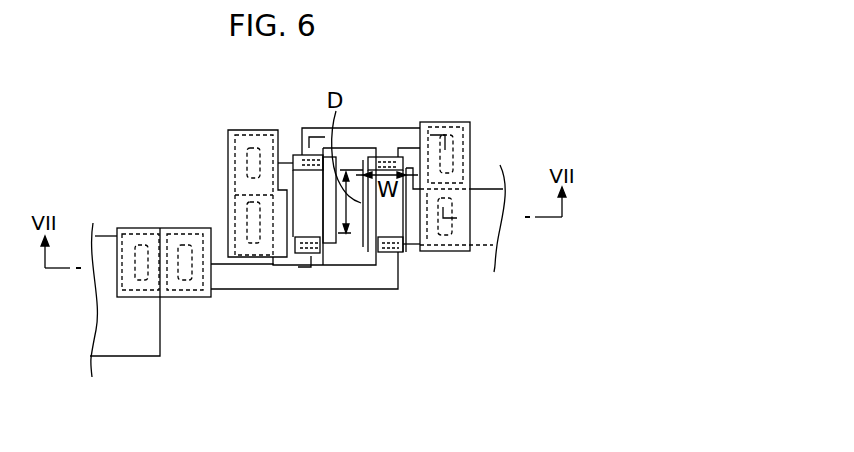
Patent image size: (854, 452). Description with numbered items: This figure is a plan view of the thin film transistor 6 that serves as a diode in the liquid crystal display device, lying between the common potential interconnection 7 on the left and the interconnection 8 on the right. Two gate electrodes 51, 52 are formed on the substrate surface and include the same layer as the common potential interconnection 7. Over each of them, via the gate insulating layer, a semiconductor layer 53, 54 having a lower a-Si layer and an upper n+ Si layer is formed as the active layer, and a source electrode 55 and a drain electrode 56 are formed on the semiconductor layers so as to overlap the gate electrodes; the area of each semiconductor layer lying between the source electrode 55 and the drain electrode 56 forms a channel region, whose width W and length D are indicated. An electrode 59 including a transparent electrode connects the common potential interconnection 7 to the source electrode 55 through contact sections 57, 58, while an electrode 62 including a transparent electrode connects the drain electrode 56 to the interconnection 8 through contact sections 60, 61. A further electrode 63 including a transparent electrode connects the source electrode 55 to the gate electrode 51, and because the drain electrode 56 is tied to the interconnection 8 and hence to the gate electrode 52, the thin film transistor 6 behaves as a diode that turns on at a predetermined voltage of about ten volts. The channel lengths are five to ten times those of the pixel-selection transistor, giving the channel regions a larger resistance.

The thin film transistor 6 is at (507, 93).
The common potential interconnection 7 is at (133, 347).
The interconnection 8 is at (497, 242).
The gate electrode 51 is at (286, 155).
The gate electrode 52 is at (358, 202).
The semiconductor layer 53 is at (295, 255).
The semiconductor layer 54 is at (376, 218).
The source electrode 55 is at (237, 290).
The drain electrode 56 is at (400, 130).
The contact section 57 is at (142, 223).
The contact section 58 is at (187, 228).
The electrode 59 is at (165, 228).
The contact section 60 is at (453, 130).
The contact section 61 is at (437, 253).
The electrode 62 is at (459, 252).
The electrode 63 is at (233, 130).